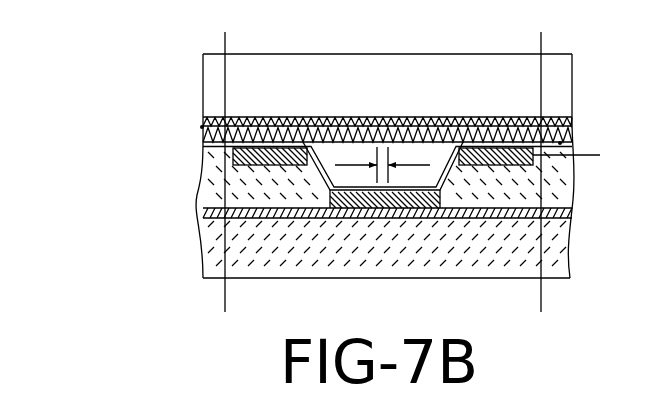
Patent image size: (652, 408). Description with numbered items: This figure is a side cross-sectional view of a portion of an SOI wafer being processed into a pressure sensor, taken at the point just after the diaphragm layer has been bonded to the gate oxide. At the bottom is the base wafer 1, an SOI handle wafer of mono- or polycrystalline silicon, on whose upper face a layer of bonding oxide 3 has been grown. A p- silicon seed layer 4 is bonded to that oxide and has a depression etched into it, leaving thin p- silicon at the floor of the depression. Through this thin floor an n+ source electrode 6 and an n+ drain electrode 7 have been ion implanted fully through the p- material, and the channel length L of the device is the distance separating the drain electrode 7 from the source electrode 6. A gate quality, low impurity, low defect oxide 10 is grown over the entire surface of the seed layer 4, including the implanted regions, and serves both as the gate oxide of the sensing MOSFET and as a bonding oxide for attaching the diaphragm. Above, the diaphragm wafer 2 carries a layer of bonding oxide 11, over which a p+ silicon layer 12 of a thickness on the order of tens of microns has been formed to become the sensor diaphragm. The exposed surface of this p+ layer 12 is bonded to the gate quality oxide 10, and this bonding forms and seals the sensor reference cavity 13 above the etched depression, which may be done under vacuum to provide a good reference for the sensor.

The base wafer 1 is at (203, 265).
The diaphragm wafer 2 is at (215, 70).
The bonding oxide 3 is at (560, 214).
The p- silicon seed layer 4 is at (200, 170).
The source electrode 6 is at (600, 155).
The drain electrode 7 is at (252, 163).
The gate quality oxide 10 is at (560, 143).
The bonding oxide 11 is at (558, 118).
The p+ silicon layer 12 is at (201, 126).
The sensor reference cavity 13 is at (330, 120).
The channel length L is at (397, 117).